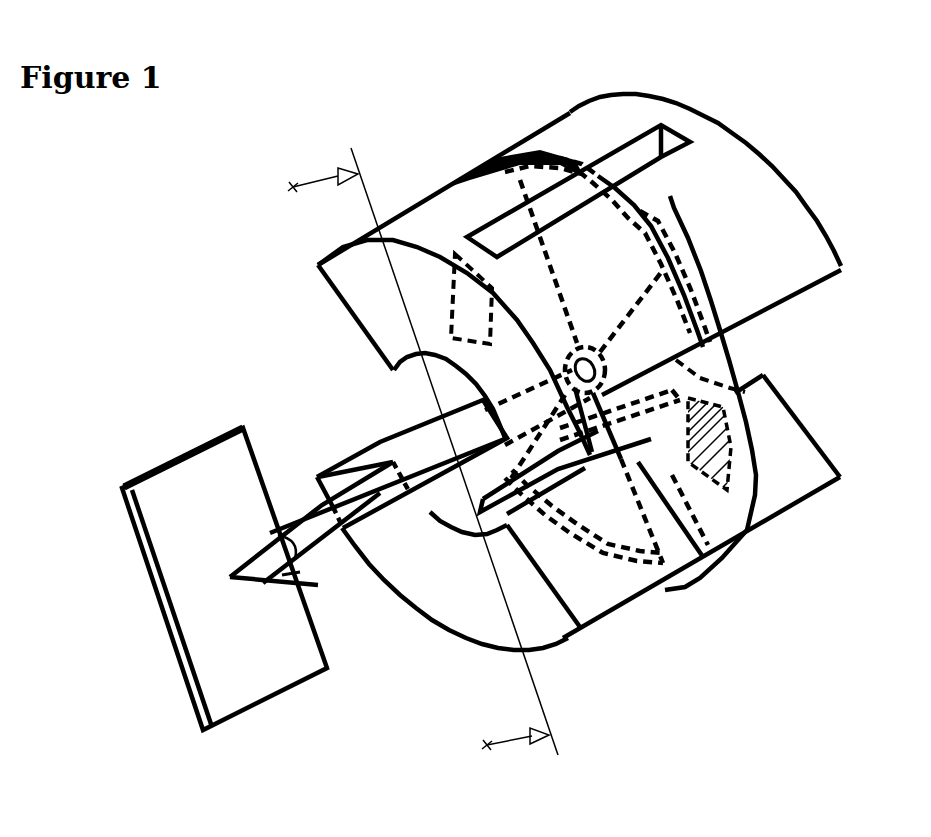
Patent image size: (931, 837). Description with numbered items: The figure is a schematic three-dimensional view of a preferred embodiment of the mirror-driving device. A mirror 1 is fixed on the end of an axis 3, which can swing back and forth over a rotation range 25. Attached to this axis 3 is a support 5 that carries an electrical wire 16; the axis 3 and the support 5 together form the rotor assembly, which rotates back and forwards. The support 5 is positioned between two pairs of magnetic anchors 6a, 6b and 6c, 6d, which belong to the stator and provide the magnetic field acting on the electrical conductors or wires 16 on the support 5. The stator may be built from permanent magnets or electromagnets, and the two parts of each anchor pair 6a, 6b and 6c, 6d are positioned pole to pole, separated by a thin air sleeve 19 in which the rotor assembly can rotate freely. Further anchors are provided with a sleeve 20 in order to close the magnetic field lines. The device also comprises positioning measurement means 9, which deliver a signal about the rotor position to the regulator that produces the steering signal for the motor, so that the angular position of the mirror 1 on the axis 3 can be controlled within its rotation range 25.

The mirror 1 is at (227, 675).
The axis 3 is at (320, 520).
The support 5 is at (500, 157).
The magnetic anchor 6a is at (660, 312).
The magnetic anchor 6b is at (753, 250).
The magnetic anchor 6c is at (598, 578).
The magnetic anchor 6d is at (793, 485).
The positioning measurement means 9 is at (713, 448).
The electrical wire 16 is at (553, 257).
The air sleeve 19 is at (558, 77).
The sleeve 20 is at (661, 20).
The rotation range 25 is at (243, 557).